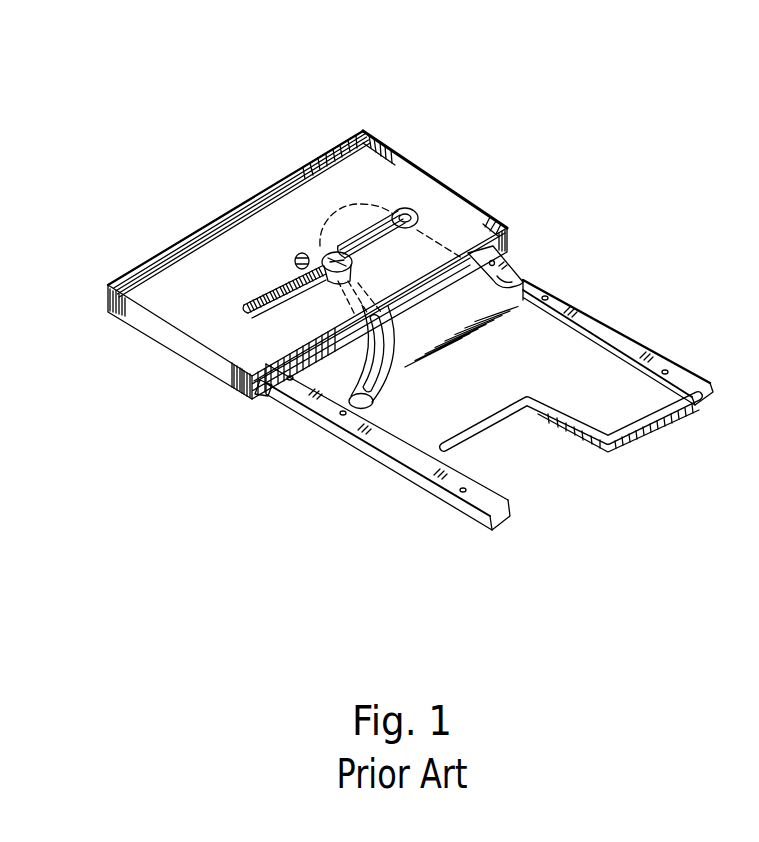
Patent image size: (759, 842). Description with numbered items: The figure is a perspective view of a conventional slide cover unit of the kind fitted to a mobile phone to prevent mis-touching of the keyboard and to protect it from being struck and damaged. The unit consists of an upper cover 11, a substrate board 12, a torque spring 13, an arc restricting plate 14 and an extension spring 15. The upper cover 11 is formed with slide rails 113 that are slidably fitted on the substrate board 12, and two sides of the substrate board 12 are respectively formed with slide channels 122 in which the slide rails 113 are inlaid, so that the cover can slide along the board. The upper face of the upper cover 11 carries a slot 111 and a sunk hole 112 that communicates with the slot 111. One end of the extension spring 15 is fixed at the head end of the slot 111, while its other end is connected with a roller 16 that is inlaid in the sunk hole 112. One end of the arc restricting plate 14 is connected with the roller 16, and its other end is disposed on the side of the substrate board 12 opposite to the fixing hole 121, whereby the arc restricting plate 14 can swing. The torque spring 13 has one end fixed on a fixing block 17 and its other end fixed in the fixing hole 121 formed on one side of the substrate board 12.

The upper cover 11 is at (322, 182).
The slot 111 is at (270, 287).
The sunk hole 112 is at (413, 212).
The slide rails 113 is at (262, 396).
The substrate board 12 is at (598, 325).
The fixing hole 121 is at (523, 290).
The slide channels 122 is at (462, 511).
The torque spring 13 is at (390, 204).
The arc restricting plate 14 is at (422, 377).
The extension spring 15 is at (247, 306).
The roller 16 is at (323, 250).
The fixing block 17 is at (300, 254).